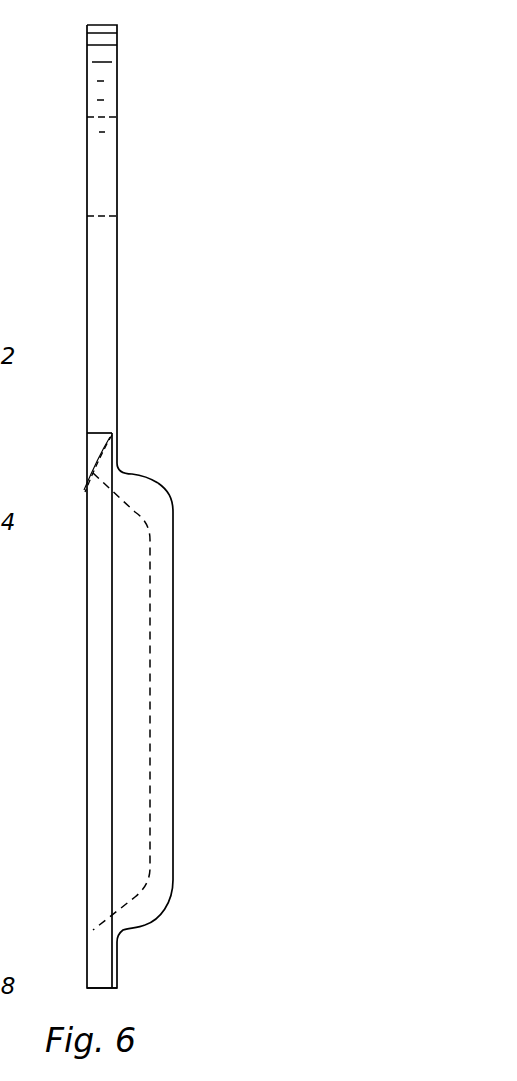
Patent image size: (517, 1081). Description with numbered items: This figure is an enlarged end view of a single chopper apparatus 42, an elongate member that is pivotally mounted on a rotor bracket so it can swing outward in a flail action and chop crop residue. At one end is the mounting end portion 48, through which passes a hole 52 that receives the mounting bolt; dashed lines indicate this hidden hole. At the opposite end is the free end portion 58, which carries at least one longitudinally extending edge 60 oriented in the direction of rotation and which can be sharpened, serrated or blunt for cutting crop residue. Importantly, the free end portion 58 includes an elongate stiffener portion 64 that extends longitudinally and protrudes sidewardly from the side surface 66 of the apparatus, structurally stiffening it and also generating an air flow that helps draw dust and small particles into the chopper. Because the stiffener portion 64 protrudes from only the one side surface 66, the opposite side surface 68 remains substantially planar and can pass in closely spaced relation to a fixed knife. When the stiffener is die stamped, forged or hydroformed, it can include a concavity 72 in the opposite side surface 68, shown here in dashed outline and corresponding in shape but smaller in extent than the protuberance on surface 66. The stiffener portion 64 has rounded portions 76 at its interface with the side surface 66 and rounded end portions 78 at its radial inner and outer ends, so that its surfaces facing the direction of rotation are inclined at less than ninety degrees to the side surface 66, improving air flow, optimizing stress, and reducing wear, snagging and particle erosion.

The chopper apparatus 42 is at (120, 357).
The mounting end portion 48 is at (117, 38).
The hole 52 is at (96, 120).
The free end portion 58 is at (118, 975).
The longitudinally extending edge 60 is at (19, 786).
The stiffener portion 64 is at (175, 582).
The side surface 66 is at (117, 420).
The opposite side surface 68 is at (87, 740).
The concavity 72 is at (150, 880).
The rounded portions 76 is at (130, 470).
The rounded end portions 78 is at (168, 495).